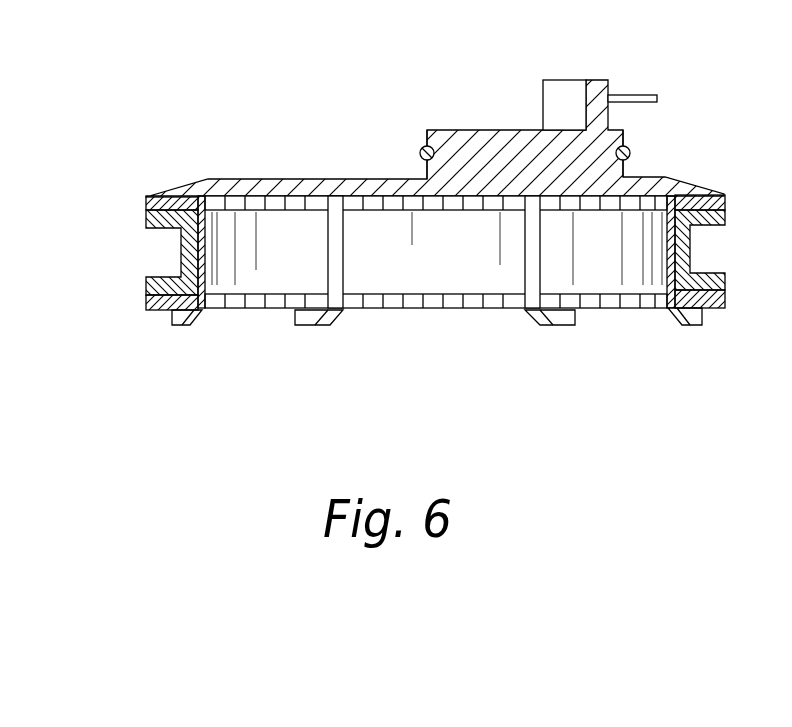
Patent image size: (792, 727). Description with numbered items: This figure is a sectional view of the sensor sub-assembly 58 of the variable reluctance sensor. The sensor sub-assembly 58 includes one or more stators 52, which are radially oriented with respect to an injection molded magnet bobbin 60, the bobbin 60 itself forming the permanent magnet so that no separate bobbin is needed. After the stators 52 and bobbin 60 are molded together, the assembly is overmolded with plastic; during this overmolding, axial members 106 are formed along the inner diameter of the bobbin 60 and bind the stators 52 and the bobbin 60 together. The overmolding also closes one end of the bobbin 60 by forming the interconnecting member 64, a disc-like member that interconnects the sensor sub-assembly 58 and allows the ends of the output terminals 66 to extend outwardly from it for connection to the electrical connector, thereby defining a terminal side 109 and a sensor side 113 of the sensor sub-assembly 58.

The stator 52 is at (717, 193).
The sensor sub-assembly 58 is at (450, 228).
The bobbin 60 is at (146, 222).
The interconnecting member 64 is at (365, 188).
The output terminal 66 is at (633, 98).
The axial member 106 is at (206, 309).
The terminal side 109 is at (457, 94).
The sensor side 113 is at (442, 336).